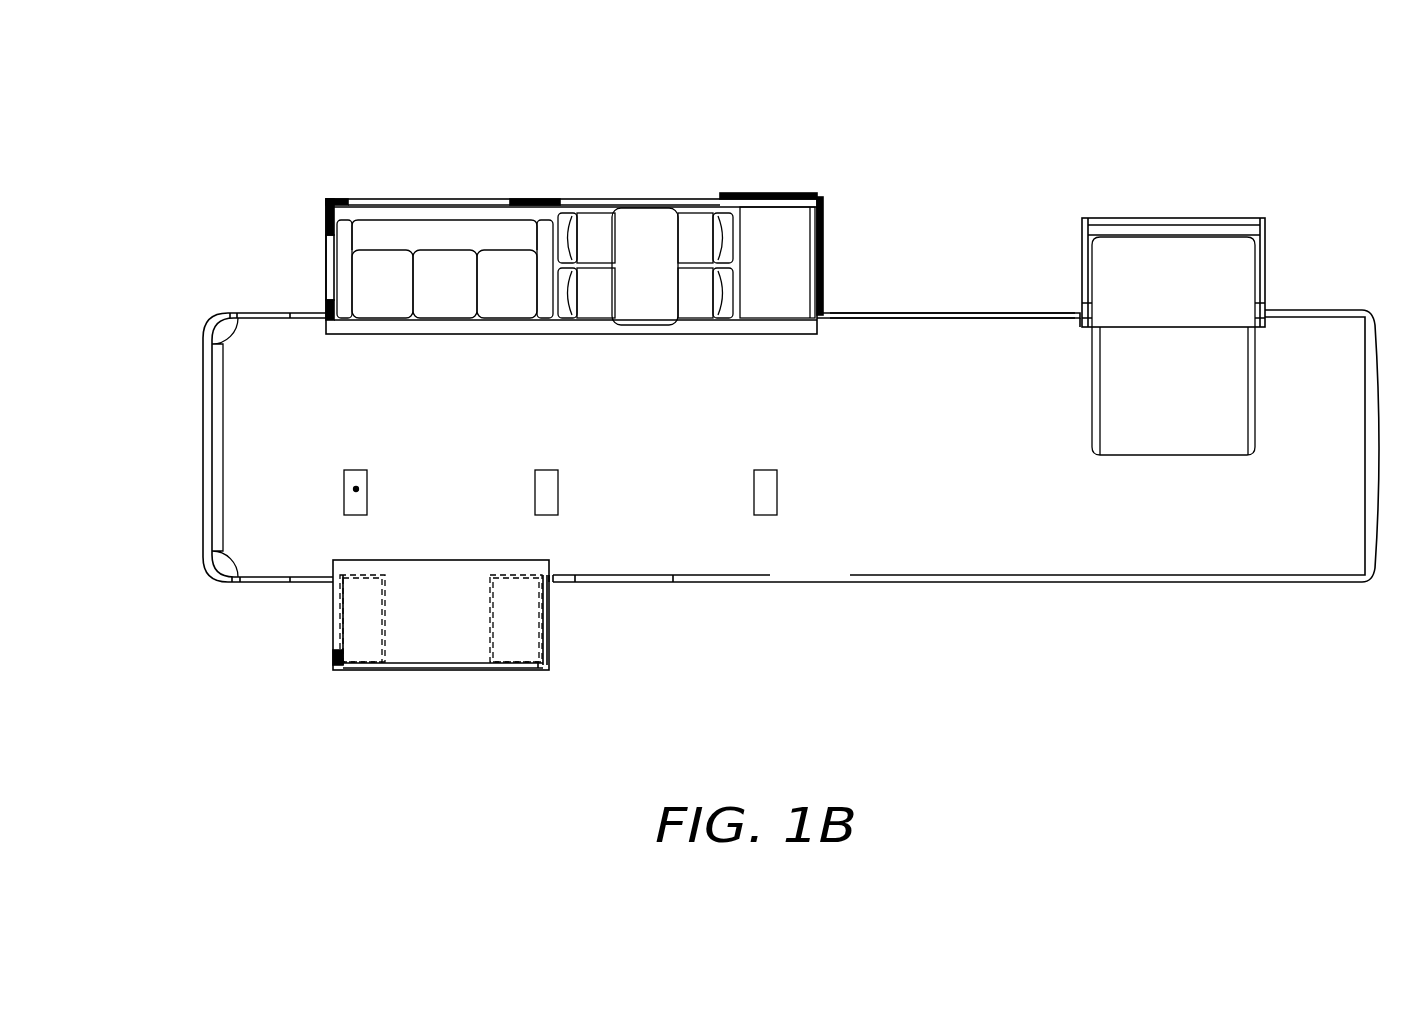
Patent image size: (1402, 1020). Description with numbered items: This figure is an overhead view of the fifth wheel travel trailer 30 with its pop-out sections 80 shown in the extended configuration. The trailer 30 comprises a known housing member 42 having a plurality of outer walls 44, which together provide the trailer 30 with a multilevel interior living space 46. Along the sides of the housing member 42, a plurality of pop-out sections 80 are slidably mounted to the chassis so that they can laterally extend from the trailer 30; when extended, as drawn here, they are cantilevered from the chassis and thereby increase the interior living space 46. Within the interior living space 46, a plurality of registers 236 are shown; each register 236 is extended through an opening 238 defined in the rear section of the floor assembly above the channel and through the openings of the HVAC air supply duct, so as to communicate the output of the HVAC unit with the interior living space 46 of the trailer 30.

The trailer 30 is at (775, 132).
The housing member 42 is at (160, 360).
The outer walls 44 is at (933, 315).
The interior living space 46 is at (672, 453).
The pop-out sections 80 is at (438, 198).
The registers 236 is at (356, 470).
The openings 238 is at (330, 484).